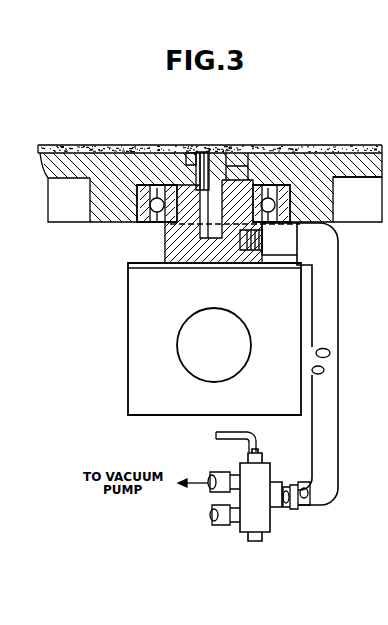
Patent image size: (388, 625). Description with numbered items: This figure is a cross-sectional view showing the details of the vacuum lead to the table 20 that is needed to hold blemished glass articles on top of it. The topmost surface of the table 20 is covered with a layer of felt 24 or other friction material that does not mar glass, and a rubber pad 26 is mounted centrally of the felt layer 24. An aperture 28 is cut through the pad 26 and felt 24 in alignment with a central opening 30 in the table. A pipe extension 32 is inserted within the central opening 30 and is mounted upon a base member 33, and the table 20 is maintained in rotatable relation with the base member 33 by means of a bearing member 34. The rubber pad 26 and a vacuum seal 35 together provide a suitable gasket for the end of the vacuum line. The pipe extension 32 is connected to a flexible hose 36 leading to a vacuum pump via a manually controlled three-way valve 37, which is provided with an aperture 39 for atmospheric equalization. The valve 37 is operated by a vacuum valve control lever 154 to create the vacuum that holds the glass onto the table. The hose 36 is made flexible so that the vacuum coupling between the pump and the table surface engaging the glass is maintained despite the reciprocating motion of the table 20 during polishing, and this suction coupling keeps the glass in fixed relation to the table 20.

The table 20 is at (76, 154).
The layer of felt 24 is at (344, 151).
The rubber pad 26 is at (245, 190).
The aperture 28 is at (213, 152).
The central opening 30 is at (192, 153).
The pipe extension 32 is at (205, 152).
The base member 33 is at (264, 186).
The bearing member 34 is at (290, 201).
The vacuum seal 35 is at (229, 172).
The flexible hose 36 is at (323, 372).
The 3-way valve 37 is at (272, 514).
The aperture for atmospheric equalization 39 is at (227, 524).
The vacuum valve control lever 154 is at (216, 436).